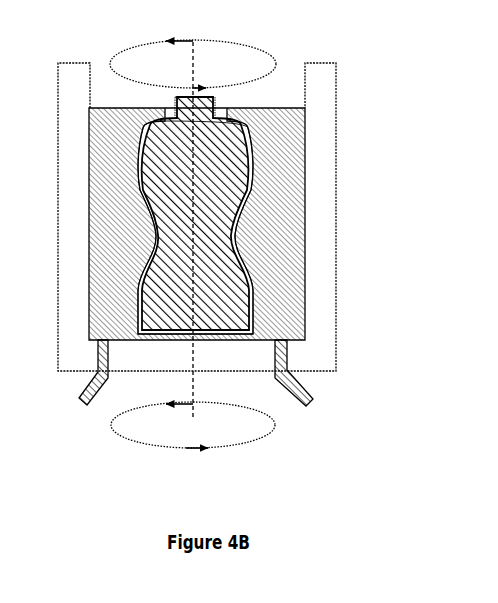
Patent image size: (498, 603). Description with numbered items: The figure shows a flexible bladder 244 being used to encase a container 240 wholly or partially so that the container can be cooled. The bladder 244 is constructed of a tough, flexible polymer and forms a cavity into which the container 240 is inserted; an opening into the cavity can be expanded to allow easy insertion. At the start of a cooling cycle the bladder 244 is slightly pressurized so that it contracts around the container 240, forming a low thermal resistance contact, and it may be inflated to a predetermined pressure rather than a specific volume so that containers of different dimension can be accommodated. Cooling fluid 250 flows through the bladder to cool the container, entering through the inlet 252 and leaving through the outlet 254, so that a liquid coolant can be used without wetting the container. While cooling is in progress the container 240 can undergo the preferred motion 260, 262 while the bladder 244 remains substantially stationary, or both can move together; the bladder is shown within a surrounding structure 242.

The container 240 is at (233, 157).
The housing 242 is at (57, 333).
The flexible bladder 244 is at (232, 240).
The cooling fluid 250 is at (285, 323).
The inlet 252 is at (75, 408).
The outlet 254 is at (316, 405).
The preferred motion 260 is at (148, 451).
The preferred motion 262 is at (237, 41).